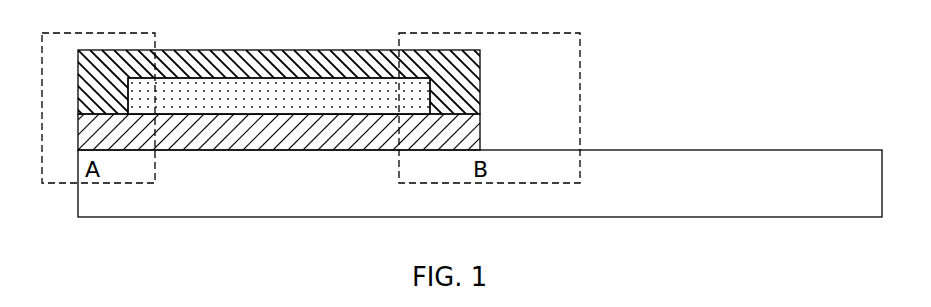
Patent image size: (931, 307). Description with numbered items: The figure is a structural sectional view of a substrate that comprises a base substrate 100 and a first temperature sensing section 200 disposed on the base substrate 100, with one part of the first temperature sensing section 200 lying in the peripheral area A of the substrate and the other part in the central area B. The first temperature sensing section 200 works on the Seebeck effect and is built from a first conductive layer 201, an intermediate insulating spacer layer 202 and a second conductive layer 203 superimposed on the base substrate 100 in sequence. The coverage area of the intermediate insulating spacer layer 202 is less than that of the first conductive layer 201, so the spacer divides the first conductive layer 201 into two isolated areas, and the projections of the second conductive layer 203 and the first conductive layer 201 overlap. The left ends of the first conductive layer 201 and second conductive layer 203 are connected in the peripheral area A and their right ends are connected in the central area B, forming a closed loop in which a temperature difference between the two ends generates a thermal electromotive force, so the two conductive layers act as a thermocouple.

The base substrate 100 is at (763, 177).
The first temperature sensing section 200 is at (491, 50).
The first conductive layer 201 is at (276, 148).
The intermediate insulating spacer layer 202 is at (279, 67).
The second conductive layer 203 is at (278, 67).